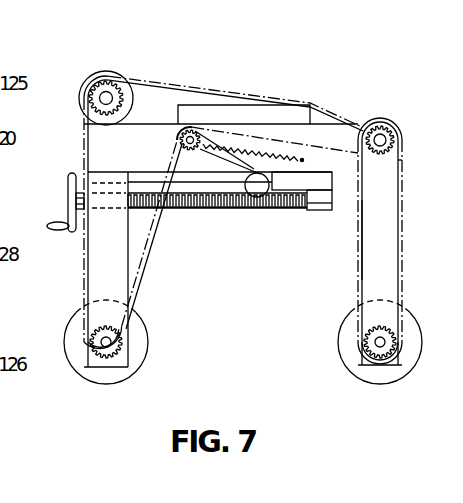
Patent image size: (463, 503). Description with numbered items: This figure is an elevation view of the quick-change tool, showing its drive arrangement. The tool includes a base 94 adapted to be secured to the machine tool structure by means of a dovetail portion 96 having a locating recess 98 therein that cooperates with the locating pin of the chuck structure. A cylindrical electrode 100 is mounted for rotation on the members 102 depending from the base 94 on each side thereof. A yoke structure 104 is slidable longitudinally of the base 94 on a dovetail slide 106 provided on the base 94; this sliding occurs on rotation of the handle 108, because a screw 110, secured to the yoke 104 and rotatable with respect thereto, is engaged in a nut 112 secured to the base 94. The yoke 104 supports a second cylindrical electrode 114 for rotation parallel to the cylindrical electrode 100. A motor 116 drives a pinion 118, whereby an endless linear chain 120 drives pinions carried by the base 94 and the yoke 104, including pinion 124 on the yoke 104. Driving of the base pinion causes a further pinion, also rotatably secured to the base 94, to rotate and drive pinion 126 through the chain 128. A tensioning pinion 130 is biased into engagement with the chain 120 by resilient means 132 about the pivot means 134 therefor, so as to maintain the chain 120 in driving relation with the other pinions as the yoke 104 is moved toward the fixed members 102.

The base 94 is at (344, 126).
The dovetail portion 96 is at (221, 132).
The locating recess 98 is at (293, 97).
The cylindrical electrode 100 is at (385, 386).
The members 102 is at (402, 160).
The yoke structure 104 is at (86, 277).
The dovetail slide 106 is at (172, 213).
The handle 108 is at (54, 223).
The screw 110 is at (195, 207).
The nut 112 is at (313, 212).
The cylindrical electrode 114 is at (120, 387).
The motor 116 is at (131, 77).
The pinion 118 is at (150, 84).
The endless linear chain 120 is at (224, 92).
The pinion 124 is at (120, 326).
The pinion 126 is at (366, 339).
The chain 128 is at (360, 239).
The pinion 130 is at (177, 142).
The resilient means 132 is at (301, 152).
The pivot means 134 is at (253, 206).